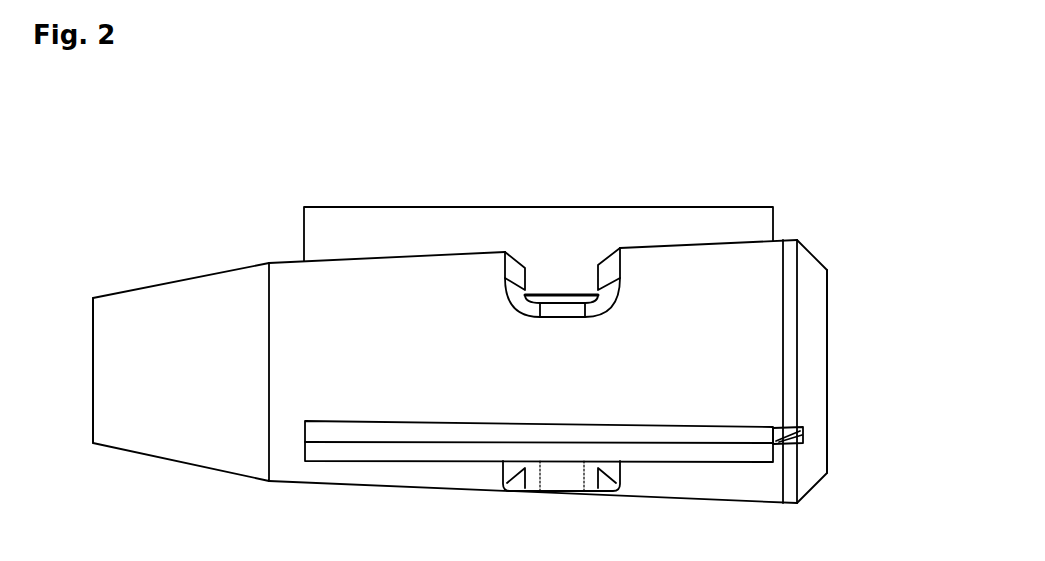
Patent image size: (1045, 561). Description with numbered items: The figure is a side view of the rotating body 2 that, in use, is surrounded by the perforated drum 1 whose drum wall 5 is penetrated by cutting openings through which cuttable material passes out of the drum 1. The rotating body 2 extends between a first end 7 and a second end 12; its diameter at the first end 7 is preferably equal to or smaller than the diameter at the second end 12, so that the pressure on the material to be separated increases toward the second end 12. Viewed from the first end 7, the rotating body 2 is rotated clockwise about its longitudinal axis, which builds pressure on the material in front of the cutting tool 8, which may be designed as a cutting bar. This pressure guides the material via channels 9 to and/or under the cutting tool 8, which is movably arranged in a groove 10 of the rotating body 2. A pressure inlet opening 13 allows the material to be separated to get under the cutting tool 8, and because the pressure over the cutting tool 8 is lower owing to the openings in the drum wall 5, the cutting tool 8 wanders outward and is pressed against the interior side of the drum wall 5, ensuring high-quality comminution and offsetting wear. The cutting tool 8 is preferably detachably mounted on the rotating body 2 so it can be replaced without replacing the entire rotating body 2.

The drum 1 is at (298, 282).
The rotating body 2 is at (293, 463).
The drum wall 5 is at (723, 305).
The first end 7 is at (93, 403).
The cutting tool 8 is at (447, 220).
The channels 9 is at (558, 300).
The groove 10 is at (800, 433).
The second end 12 is at (827, 371).
The pressure inlet opening 13 is at (542, 296).